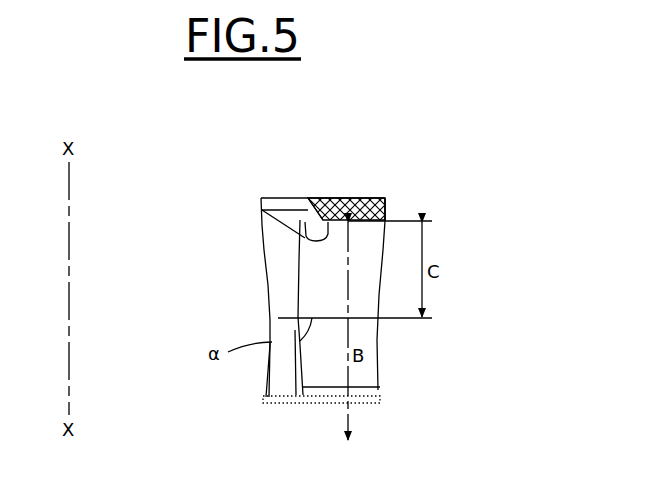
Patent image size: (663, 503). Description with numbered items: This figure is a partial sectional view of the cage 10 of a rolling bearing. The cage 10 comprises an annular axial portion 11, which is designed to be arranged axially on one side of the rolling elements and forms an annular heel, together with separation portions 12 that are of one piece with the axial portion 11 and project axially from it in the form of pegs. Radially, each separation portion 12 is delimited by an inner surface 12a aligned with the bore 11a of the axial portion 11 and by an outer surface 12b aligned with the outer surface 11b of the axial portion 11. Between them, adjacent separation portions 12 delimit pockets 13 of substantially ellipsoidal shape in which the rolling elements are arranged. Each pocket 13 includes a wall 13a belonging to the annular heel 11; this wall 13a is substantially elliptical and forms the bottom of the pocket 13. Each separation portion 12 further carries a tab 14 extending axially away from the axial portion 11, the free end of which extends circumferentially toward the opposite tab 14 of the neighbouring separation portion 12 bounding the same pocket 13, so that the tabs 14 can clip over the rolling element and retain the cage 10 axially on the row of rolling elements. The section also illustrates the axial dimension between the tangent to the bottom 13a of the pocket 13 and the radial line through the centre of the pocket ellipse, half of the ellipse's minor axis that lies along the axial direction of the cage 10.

The cage 10 is at (391, 143).
The annular axial portion 11 is at (347, 197).
The bore 11a is at (300, 197).
The outer surface 11b is at (386, 212).
The separation portion 12 is at (263, 245).
The inner surface 12a is at (272, 290).
The outer surface 12b is at (377, 294).
The pocket 13 is at (380, 385).
The wall 13a is at (261, 210).
The tab 14 is at (317, 399).